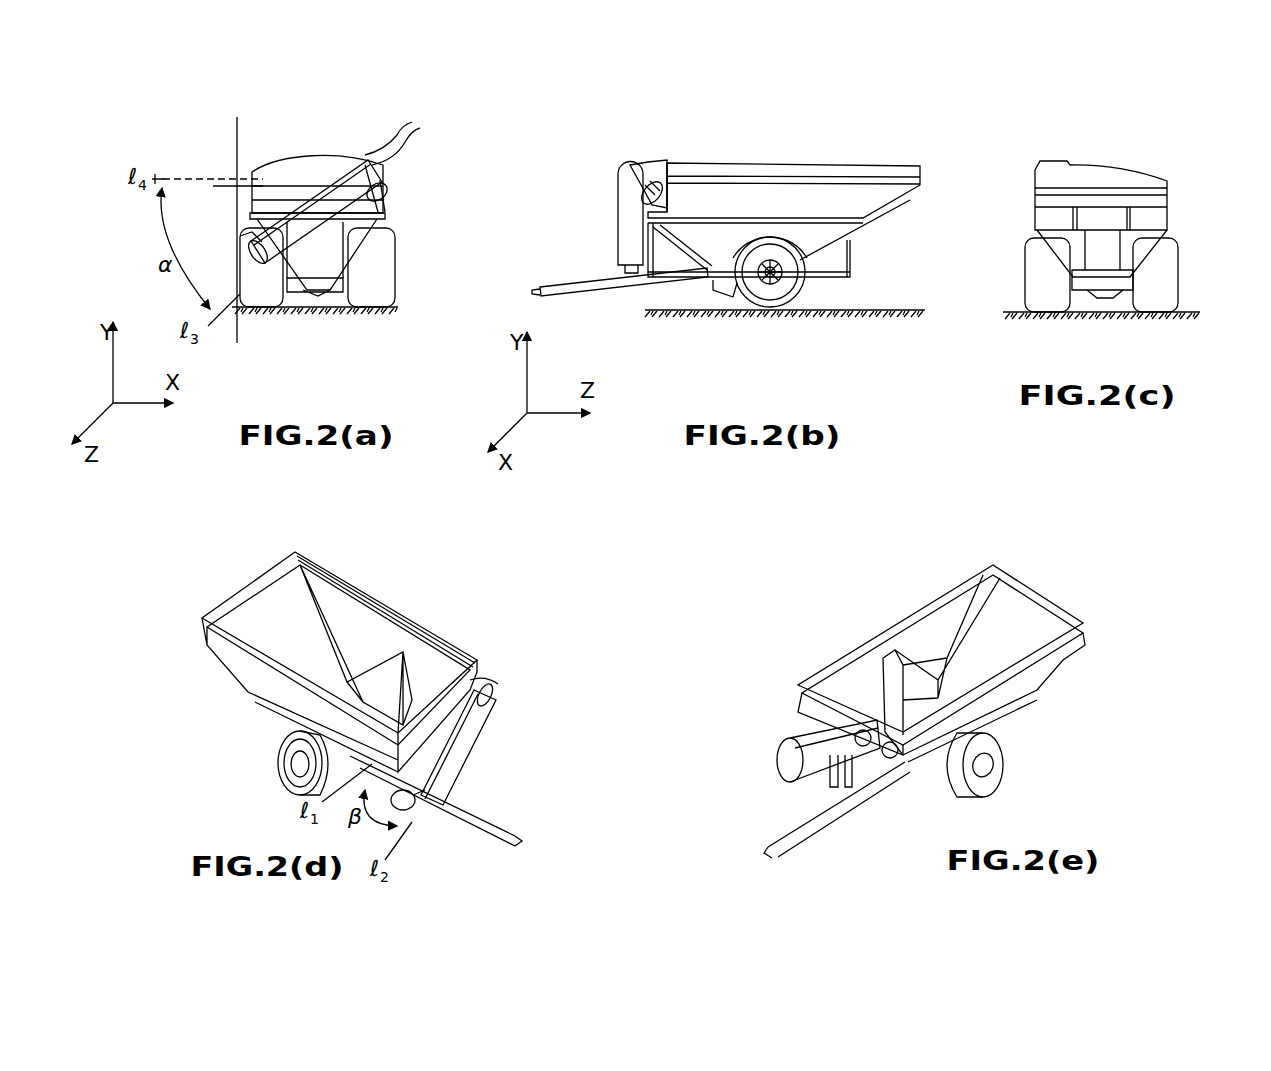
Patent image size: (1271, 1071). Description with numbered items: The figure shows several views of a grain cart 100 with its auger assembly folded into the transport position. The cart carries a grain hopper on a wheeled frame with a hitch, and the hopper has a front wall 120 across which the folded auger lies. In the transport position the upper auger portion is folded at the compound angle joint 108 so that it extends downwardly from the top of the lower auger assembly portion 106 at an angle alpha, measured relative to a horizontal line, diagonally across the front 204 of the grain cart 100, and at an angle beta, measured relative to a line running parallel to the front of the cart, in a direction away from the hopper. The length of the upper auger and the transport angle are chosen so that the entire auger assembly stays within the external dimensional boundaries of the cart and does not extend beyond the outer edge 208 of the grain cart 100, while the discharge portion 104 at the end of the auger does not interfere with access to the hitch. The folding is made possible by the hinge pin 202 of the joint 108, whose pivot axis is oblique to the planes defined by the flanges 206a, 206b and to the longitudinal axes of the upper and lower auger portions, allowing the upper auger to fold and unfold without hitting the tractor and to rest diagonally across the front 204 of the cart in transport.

The grain cart 100 is at (320, 150).
The discharge portion 104 is at (241, 244).
The lower auger assembly portion 106 is at (384, 199).
The joint 108 is at (380, 172).
The front wall 120 is at (265, 200).
The hinge pin 202 is at (622, 192).
The front of the grain cart 204 is at (483, 690).
The flange 206a is at (800, 713).
The flange 206b is at (893, 758).
The outer edge 208 is at (237, 128).